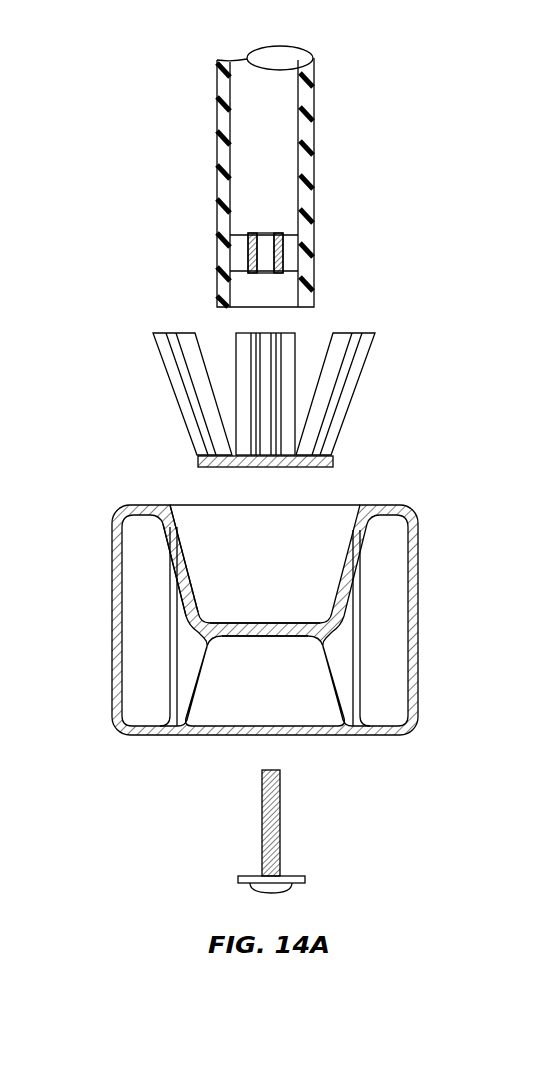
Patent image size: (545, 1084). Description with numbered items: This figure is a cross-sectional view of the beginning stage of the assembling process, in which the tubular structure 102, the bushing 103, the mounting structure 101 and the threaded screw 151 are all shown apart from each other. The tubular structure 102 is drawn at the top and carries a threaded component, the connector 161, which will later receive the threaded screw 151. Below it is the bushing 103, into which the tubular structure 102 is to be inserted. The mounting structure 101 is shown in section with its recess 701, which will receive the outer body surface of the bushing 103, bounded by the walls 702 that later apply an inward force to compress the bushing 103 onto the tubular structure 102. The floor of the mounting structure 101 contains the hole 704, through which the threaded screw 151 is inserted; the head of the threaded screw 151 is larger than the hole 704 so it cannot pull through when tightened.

The mounting structure 101 is at (295, 598).
The tubular structure 102 is at (314, 148).
The bushing 103 is at (395, 389).
The threaded screw 151 is at (297, 836).
The connector 161 is at (284, 259).
The recess 701 is at (316, 533).
The walls 702 is at (178, 532).
The hole 704 is at (265, 633).